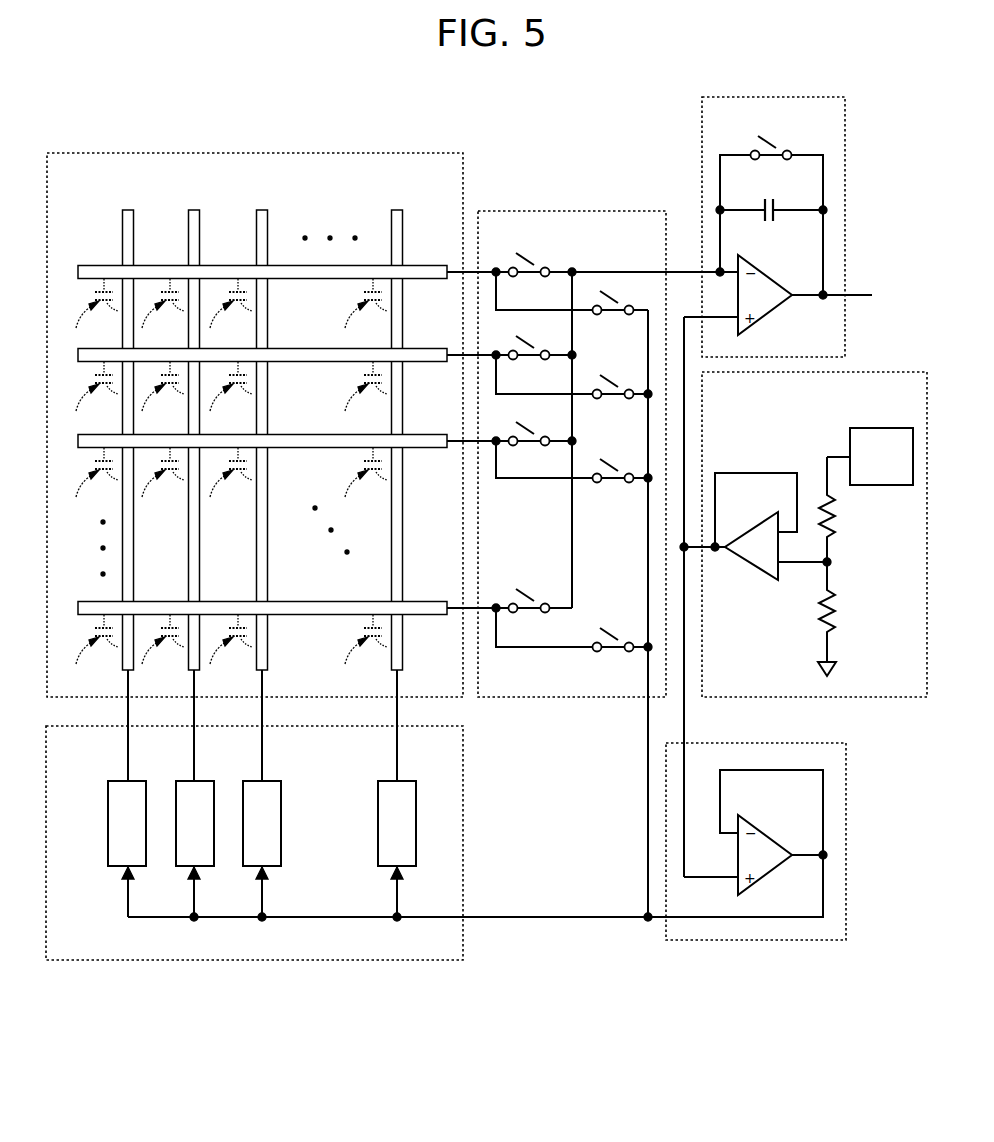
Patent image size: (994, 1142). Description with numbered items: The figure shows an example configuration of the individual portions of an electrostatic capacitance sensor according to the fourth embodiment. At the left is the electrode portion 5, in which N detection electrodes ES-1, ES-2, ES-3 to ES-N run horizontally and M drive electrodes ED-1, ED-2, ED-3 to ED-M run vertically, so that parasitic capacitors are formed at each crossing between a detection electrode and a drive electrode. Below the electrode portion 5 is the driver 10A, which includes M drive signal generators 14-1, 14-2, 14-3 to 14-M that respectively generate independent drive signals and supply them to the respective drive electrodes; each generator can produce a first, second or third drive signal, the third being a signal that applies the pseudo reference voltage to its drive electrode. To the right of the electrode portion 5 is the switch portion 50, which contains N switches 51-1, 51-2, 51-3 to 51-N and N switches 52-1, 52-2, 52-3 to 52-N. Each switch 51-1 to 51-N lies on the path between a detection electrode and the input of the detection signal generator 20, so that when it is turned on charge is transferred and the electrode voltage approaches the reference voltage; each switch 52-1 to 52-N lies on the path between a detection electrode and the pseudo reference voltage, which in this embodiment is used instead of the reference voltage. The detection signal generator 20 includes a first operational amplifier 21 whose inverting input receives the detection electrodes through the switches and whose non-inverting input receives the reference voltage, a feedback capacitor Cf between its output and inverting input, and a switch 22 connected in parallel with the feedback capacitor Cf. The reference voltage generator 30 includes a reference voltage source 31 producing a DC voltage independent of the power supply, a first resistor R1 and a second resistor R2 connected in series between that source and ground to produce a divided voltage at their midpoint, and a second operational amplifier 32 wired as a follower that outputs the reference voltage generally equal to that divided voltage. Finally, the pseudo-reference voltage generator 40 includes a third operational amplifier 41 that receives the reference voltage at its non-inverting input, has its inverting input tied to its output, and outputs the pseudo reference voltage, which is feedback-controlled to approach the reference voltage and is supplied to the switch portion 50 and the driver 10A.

The electrode portion 5 is at (464, 176).
The switch portion 50 is at (568, 211).
The detection signal generator 20 is at (846, 158).
The first operational amplifier 21 is at (758, 282).
The switch 22 is at (768, 146).
The feedback capacitor Cf is at (774, 200).
The reference voltage generator 30 is at (870, 372).
The reference voltage source 31 is at (850, 432).
The second operational amplifier 32 is at (762, 582).
The first resistor R1 is at (838, 520).
The second resistor R2 is at (838, 614).
The pseudo-reference voltage generator 40 is at (847, 820).
The third operational amplifier 41 is at (764, 832).
The driver 10A is at (464, 832).
The drive signal generator 14-1 is at (136, 781).
The drive signal generator 14-2 is at (202, 781).
The drive signal generator 14-3 is at (270, 781).
The drive signal generator 14-M is at (404, 781).
The switch 51-1 is at (534, 258).
The switch 51-2 is at (524, 341).
The switch 51-3 is at (522, 432).
The switch 51-N is at (524, 596).
The switch 52-1 is at (610, 302).
The switch 52-2 is at (626, 378).
The switch 52-3 is at (626, 460).
The switch 52-N is at (616, 642).
The drive electrode ED-1 is at (128, 210).
The drive electrode ED-2 is at (194, 210).
The drive electrode ED-3 is at (262, 210).
The drive electrode ED-M is at (397, 210).
The detection electrode ES-1 is at (430, 265).
The detection electrode ES-2 is at (430, 348).
The detection electrode ES-3 is at (430, 434).
The detection electrode ES-N is at (430, 601).